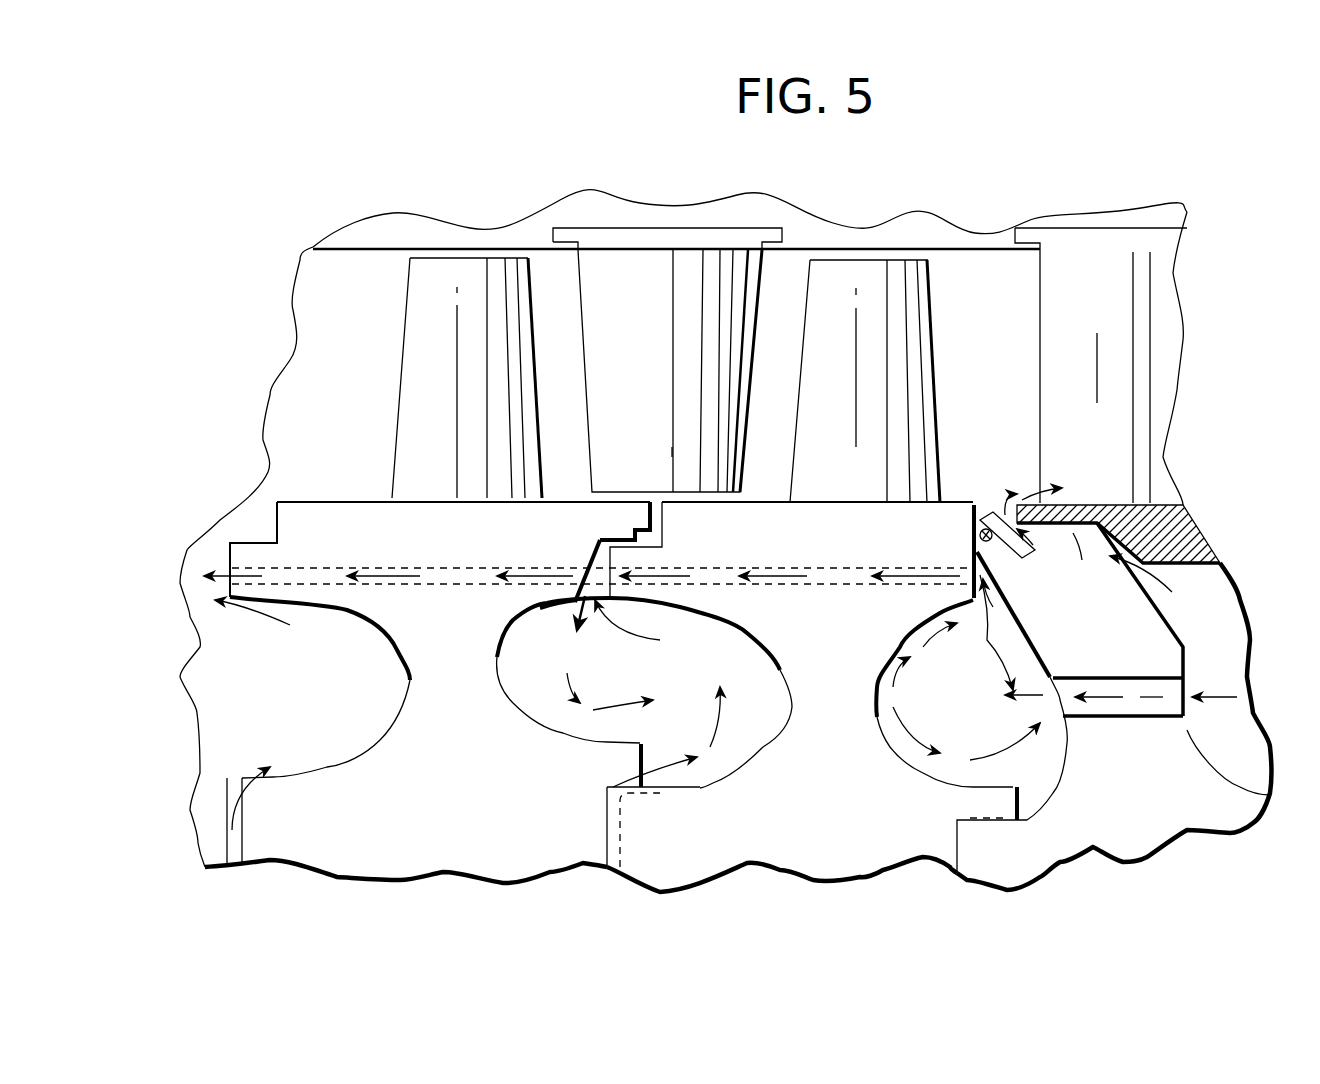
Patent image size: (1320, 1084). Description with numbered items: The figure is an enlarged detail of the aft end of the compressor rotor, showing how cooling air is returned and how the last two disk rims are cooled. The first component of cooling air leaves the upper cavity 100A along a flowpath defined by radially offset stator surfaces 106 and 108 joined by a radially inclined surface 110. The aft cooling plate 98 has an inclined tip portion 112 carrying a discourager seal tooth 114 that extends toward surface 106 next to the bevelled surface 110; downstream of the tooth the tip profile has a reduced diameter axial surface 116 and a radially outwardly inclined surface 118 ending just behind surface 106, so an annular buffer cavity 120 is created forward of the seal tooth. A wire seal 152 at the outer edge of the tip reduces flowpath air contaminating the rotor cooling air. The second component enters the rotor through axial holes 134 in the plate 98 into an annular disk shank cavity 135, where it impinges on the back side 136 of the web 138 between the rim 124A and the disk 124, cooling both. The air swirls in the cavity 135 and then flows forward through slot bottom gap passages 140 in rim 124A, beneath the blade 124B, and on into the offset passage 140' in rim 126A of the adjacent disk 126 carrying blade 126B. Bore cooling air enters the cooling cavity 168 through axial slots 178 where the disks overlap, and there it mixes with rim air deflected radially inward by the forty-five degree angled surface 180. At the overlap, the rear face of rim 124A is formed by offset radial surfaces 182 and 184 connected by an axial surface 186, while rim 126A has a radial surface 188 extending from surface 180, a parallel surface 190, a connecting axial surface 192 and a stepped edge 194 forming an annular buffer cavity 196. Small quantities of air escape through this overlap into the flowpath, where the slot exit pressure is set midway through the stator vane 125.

The aft cooling plate 98 is at (1220, 812).
The upper cavity 100A is at (1253, 738).
The radially offset surface 106 is at (1063, 520).
The radially offset surface 108 is at (1220, 557).
The radially inclined surface 110 is at (1185, 527).
The inclined tip portion 112 is at (1190, 653).
The discourager seal tooth 114 is at (1062, 532).
The reduced diameter axial surface 116 is at (1041, 598).
The radially outwardly inclined surface 118 is at (976, 548).
The annular buffer cavity 120 is at (1055, 553).
The compressor disk 124 is at (883, 850).
The disk rim 124A is at (833, 515).
The compressor blade 124B is at (893, 355).
The second to last stage stator vane 125 is at (715, 272).
The compressor disk 126 is at (353, 867).
The disk rim 126A is at (425, 527).
The compressor blade 126B is at (437, 357).
The axial hole 134 is at (1145, 707).
The annular disk shank cavity 135 is at (933, 760).
The back side of web 136 is at (880, 695).
The disk web 138 is at (810, 683).
The axial slot 140 is at (587, 595).
The axial passage 140' is at (356, 545).
The wire seal 152 is at (978, 517).
The cooling cavity 168 is at (533, 692).
The axial slot 178 is at (257, 787).
The angled surface 180 is at (570, 583).
The radial surface 182 is at (650, 540).
The radial surface 184 is at (612, 560).
The axial surface 186 is at (618, 533).
The radial surface 188 is at (592, 548).
The axial surface 190 is at (650, 525).
The axial surface 192 is at (600, 540).
The stepped edge 194 is at (640, 537).
The annular buffer cavity 196 is at (640, 542).